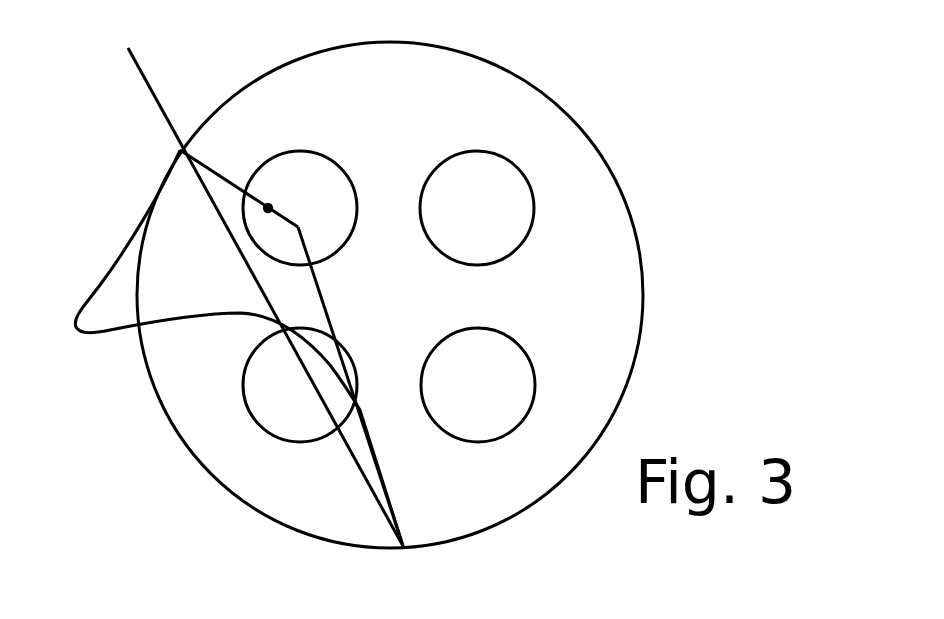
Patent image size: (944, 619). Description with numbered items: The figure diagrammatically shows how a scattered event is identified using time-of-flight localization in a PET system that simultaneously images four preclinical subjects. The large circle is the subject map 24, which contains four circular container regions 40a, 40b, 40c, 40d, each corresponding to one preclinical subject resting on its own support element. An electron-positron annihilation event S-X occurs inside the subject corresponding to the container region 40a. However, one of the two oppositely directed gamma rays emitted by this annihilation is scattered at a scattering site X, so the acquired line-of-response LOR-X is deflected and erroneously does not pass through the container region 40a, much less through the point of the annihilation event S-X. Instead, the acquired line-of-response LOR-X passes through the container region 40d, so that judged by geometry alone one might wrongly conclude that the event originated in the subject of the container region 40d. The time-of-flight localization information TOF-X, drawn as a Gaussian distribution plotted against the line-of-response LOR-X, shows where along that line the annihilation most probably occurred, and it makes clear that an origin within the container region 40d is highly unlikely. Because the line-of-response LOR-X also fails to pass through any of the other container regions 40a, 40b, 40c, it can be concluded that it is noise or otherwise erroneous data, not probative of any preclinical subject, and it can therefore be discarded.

The subject map 24 is at (650, 148).
The container region 40a is at (340, 162).
The container region 40b is at (517, 238).
The container region 40c is at (528, 370).
The container region 40d is at (244, 379).
The line-of-response LOR-X is at (365, 470).
The time-of-flight localization information TOF-X is at (118, 255).
The scattering site X is at (298, 229).
The electron-positron annihilation event S-X is at (269, 203).